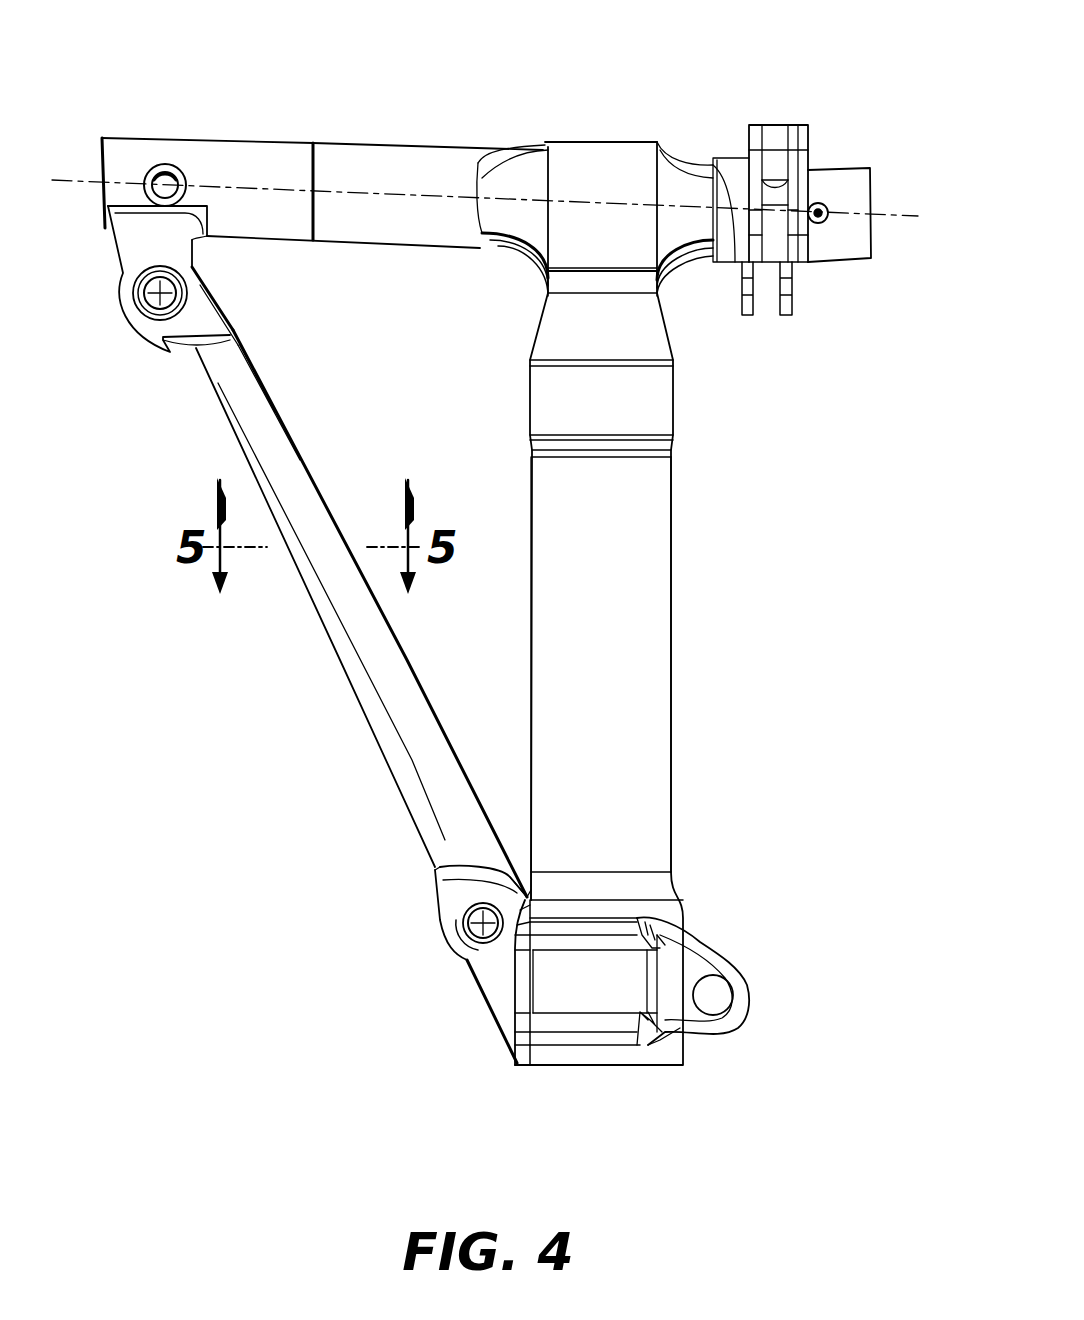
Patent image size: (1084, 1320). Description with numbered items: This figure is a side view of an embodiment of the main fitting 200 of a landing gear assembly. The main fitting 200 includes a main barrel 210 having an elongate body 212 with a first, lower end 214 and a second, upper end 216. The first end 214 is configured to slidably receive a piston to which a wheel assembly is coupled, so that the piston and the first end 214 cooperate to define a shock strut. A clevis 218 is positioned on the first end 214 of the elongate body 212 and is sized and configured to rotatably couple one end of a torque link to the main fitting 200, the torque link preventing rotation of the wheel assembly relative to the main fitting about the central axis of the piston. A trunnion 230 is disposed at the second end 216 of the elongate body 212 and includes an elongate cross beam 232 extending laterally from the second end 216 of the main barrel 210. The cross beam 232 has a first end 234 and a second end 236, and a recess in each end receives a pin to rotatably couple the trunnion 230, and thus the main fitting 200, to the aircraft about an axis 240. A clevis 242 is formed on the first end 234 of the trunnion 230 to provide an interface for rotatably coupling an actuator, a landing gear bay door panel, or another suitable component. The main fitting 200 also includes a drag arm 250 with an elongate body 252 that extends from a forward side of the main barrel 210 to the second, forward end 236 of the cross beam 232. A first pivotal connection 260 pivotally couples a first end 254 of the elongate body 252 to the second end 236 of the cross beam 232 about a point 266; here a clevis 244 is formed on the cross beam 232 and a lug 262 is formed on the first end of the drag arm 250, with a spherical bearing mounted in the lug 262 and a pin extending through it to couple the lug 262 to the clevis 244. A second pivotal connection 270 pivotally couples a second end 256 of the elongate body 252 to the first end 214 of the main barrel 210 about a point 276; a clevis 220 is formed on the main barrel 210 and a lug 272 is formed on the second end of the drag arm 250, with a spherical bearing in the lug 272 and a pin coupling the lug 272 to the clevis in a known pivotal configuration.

The main fitting 200 is at (777, 62).
The main barrel 210 is at (685, 600).
The elongate body 212 is at (633, 686).
The first end 214 is at (640, 862).
The second end 216 is at (620, 250).
The clevis 218 is at (737, 1022).
The clevis 220 is at (500, 1000).
The trunnion 230 is at (523, 108).
The cross beam 232 is at (402, 158).
The first end 234 is at (845, 168).
The second end 236 is at (192, 134).
The axis 240 is at (908, 212).
The clevis 242 is at (790, 318).
The clevis 244 is at (150, 240).
The drag arm 250 is at (298, 628).
The elongate body 252 is at (280, 433).
The first end 254 is at (268, 362).
The second end 256 is at (517, 872).
The first pivotal connection 260 is at (222, 270).
The lug 262 is at (120, 290).
The point 266 is at (143, 306).
The second pivotal connection 270 is at (420, 900).
The lug 272 is at (440, 940).
The point 276 is at (470, 962).